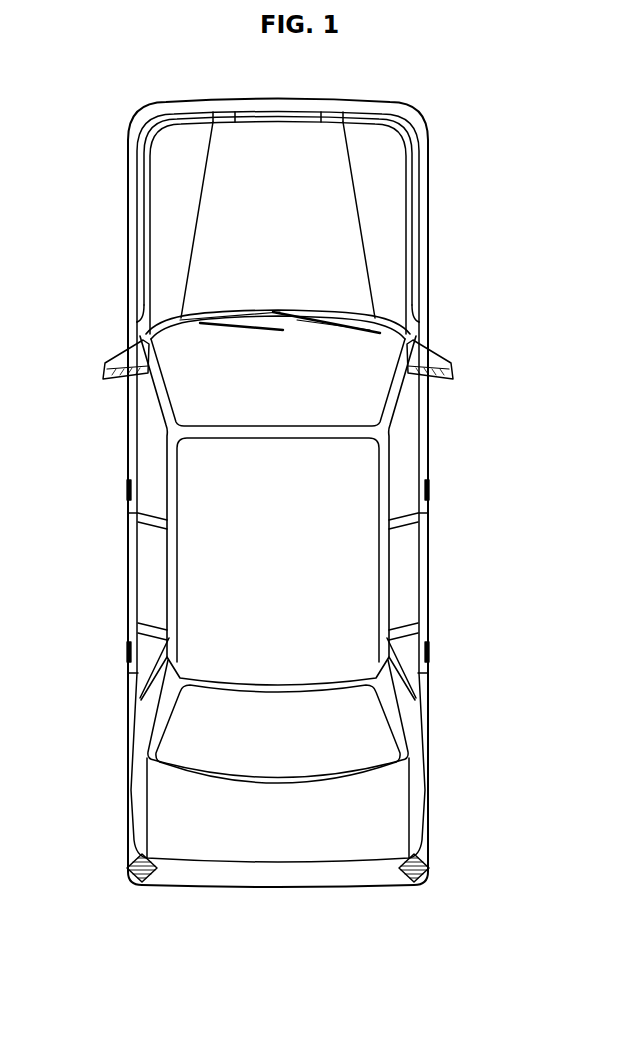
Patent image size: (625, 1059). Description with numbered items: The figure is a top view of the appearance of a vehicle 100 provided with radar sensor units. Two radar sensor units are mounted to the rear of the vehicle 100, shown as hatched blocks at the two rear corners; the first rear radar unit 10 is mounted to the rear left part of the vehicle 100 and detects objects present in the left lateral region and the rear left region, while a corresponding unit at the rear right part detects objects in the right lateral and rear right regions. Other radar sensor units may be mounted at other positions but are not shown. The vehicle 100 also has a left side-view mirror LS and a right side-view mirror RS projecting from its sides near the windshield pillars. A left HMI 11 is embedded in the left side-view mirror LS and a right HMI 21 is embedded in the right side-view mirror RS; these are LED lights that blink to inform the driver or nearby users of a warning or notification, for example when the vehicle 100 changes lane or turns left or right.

The vehicle 100 is at (443, 232).
The first rear radar unit 10 is at (127, 872).
The left HMI 11 is at (118, 379).
The right HMI 21 is at (437, 379).
The left side-view mirror LS is at (96, 382).
The right side-view mirror RS is at (459, 382).